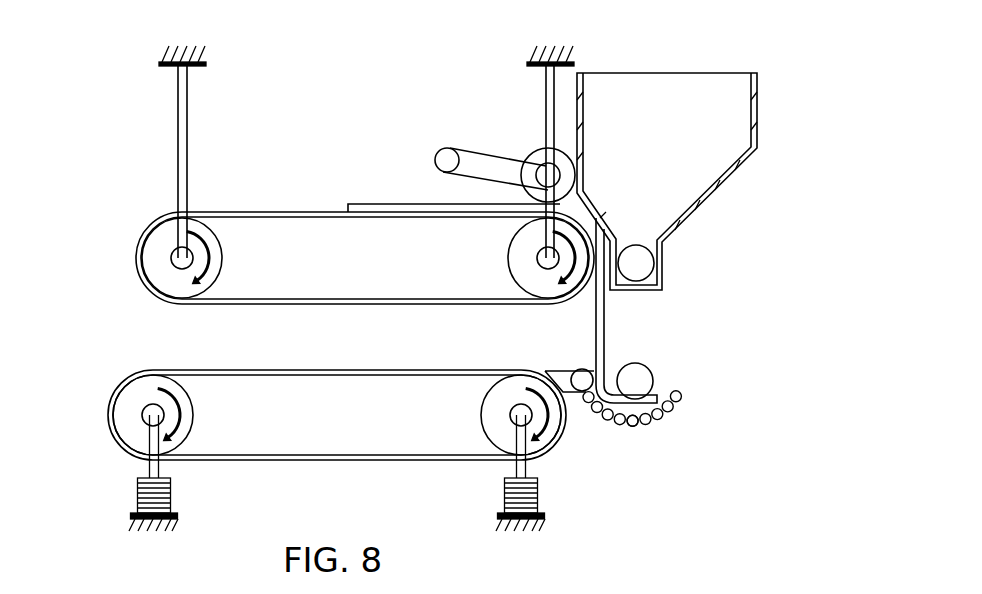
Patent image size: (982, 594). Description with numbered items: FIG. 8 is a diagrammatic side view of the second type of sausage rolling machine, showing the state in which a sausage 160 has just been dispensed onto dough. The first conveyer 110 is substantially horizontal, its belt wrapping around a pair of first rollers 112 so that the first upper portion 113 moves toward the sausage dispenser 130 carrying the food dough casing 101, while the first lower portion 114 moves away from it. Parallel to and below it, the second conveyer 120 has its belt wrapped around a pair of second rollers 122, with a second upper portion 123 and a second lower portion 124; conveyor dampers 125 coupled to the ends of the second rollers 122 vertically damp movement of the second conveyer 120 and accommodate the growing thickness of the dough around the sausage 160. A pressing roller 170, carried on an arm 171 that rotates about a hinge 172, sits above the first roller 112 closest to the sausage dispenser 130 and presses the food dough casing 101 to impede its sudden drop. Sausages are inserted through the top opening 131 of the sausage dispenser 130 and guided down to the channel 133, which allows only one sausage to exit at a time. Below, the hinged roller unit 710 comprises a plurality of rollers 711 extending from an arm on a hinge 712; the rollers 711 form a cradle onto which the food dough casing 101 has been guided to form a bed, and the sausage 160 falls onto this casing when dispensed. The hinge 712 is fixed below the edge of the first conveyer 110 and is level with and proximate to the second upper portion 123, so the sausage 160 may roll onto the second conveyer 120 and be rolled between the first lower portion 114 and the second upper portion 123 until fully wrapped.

The food dough casing 101 is at (392, 203).
The first conveyer 110 is at (323, 206).
The first rollers 112 is at (222, 255).
The first upper portion 113 is at (167, 222).
The first lower portion 114 is at (368, 306).
The second conveyer 120 is at (294, 420).
The second rollers 122 is at (194, 415).
The second upper portion 123 is at (292, 368).
The second lower portion 124 is at (338, 462).
The conveyor dampers 125 is at (137, 494).
The sausage dispenser 130 is at (703, 156).
The top opening 131 is at (667, 80).
The channel 133 is at (665, 272).
The sausage 160 is at (654, 262).
The pressing roller 170 is at (530, 160).
The arm 171 is at (483, 158).
The hinge 172 is at (440, 152).
The hinged roller unit 710 is at (635, 437).
The rollers 711 is at (681, 401).
The hinge 712 is at (578, 369).